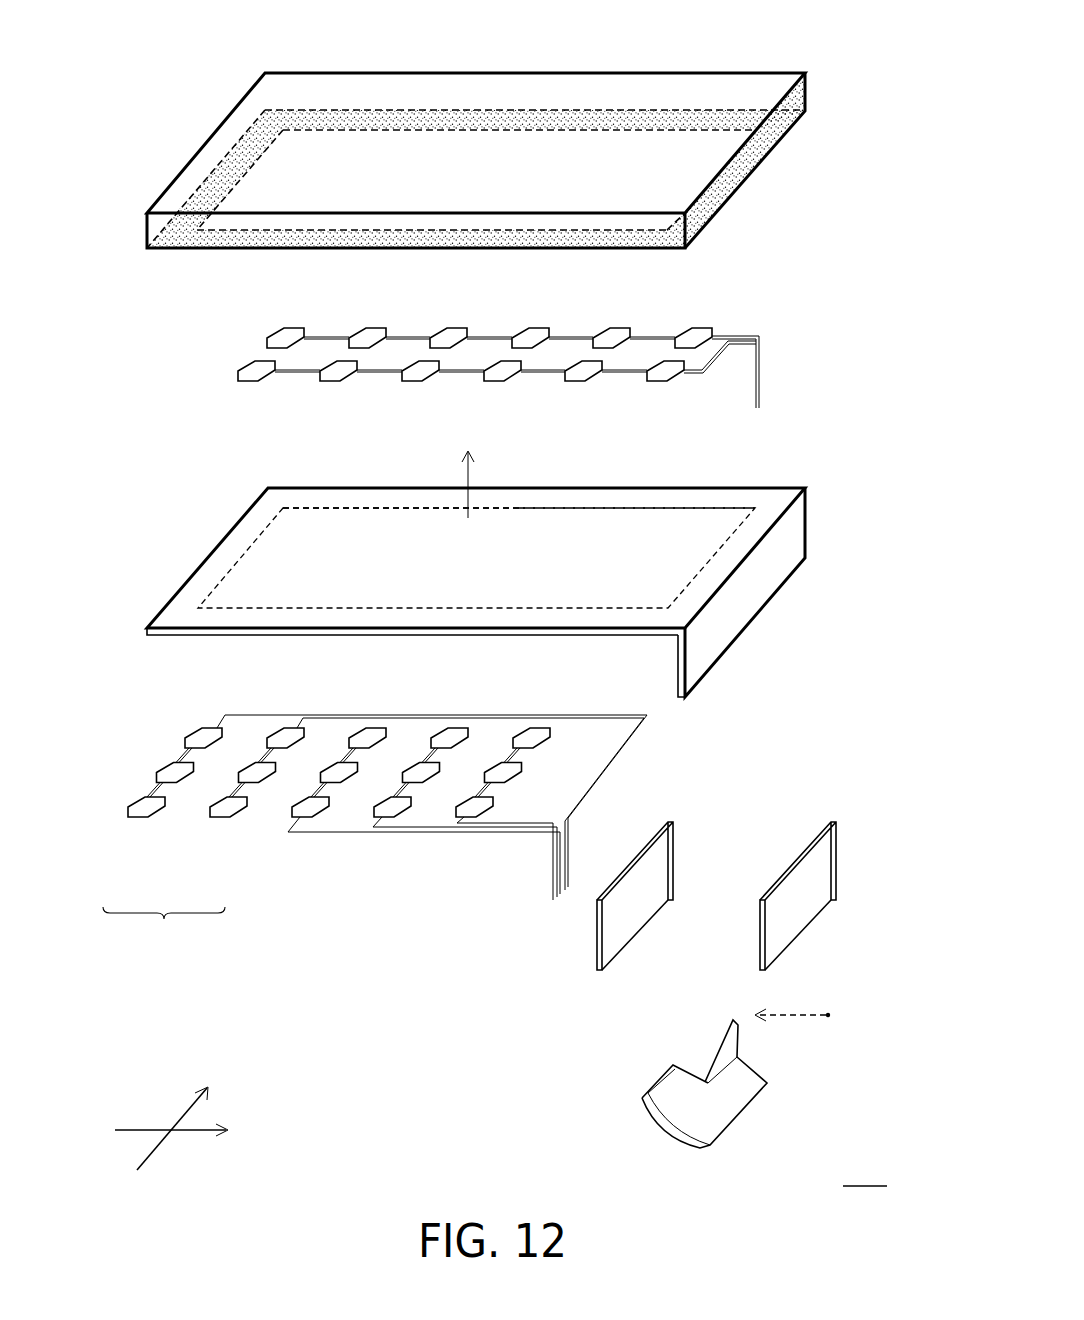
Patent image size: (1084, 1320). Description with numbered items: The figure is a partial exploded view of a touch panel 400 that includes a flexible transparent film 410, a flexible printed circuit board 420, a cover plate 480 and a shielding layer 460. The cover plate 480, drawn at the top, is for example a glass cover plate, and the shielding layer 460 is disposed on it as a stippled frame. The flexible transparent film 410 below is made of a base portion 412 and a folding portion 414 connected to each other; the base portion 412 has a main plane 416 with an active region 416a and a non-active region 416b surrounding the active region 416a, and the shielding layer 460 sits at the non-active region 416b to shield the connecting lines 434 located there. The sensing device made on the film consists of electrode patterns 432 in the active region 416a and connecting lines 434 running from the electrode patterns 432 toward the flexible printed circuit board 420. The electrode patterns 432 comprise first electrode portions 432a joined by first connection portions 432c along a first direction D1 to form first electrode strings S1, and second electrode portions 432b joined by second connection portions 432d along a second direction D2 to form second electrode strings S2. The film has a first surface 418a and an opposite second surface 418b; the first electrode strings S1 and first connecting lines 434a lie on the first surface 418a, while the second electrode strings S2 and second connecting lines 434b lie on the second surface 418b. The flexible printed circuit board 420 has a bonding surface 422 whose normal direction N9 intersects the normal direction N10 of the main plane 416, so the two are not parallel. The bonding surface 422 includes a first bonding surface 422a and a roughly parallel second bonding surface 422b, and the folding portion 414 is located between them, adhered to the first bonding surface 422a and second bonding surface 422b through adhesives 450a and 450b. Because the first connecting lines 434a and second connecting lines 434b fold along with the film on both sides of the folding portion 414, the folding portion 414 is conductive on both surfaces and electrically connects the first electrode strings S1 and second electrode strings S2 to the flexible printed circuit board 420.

The touch panel 400 is at (865, 1168).
The flexible transparent film 410 is at (515, 545).
The base portion 412 is at (643, 633).
The folding portion 414 is at (682, 670).
The main plane 416 is at (543, 493).
The active region 416a is at (688, 505).
The non-active region 416b is at (790, 488).
The first surface 418a is at (476, 558).
The second surface 418b is at (229, 638).
The flexible printed circuit board 420 is at (682, 1050).
The bonding surface 422 is at (651, 1030).
The first bonding surface 422a is at (716, 1055).
The second bonding surface 422b is at (677, 1092).
The electrode patterns 432 is at (406, 585).
The first electrode portions 432a is at (253, 362).
The second electrode portions 432b is at (144, 807).
The first connection portions 432c is at (292, 372).
The second connection portions 432d is at (166, 789).
The connecting lines 434 is at (519, 588).
The first connecting lines 434a is at (727, 337).
The second connecting lines 434b is at (602, 771).
The adhesive 450a is at (808, 905).
The adhesive 450b is at (652, 890).
The shielding layer 460 is at (387, 125).
The cover plate 480 is at (476, 130).
The first electrode strings S1 is at (168, 272).
The second electrode strings S2 is at (164, 931).
The normal direction of the bonding surface N9 is at (801, 1001).
The normal direction of the main plane N10 is at (466, 466).
The first direction D1 is at (188, 1131).
The second direction D2 is at (182, 1111).